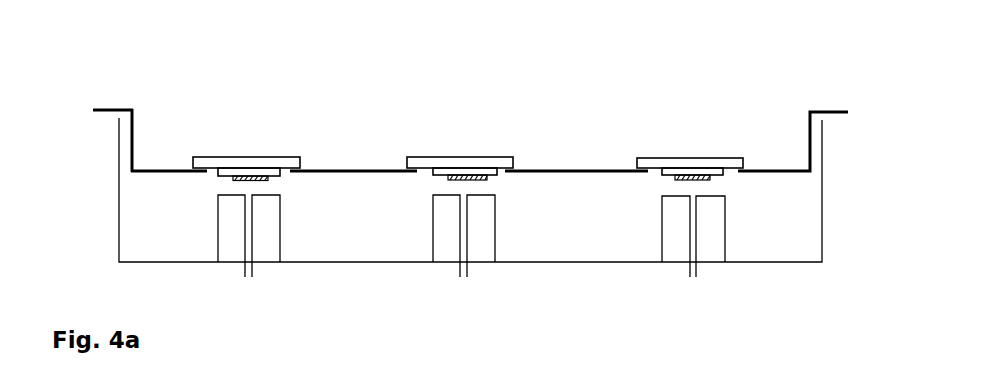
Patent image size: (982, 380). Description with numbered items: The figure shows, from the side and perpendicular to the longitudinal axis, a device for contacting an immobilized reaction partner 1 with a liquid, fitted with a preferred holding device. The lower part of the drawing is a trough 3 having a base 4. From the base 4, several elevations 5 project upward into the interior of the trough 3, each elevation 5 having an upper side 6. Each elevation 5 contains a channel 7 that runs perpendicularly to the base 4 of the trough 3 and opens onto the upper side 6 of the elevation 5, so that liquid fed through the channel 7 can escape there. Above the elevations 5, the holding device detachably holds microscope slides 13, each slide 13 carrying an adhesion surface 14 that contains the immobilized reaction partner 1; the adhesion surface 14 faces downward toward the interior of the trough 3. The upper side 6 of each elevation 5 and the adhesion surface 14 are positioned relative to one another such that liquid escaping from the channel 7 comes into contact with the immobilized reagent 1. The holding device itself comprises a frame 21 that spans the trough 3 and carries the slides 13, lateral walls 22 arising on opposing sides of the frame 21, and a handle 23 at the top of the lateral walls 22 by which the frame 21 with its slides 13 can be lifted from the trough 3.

The immobilized reaction partner 1 is at (233, 172).
The trough 3 is at (138, 272).
The base 4 is at (178, 262).
The elevation 5 is at (232, 231).
The upper side 6 is at (268, 197).
The channel 7 is at (251, 227).
The microscope slide 13 is at (280, 162).
The adhesion surface 14 is at (256, 176).
The frame 21 is at (143, 174).
The lateral walls 22 is at (131, 150).
The handle 23 is at (110, 109).